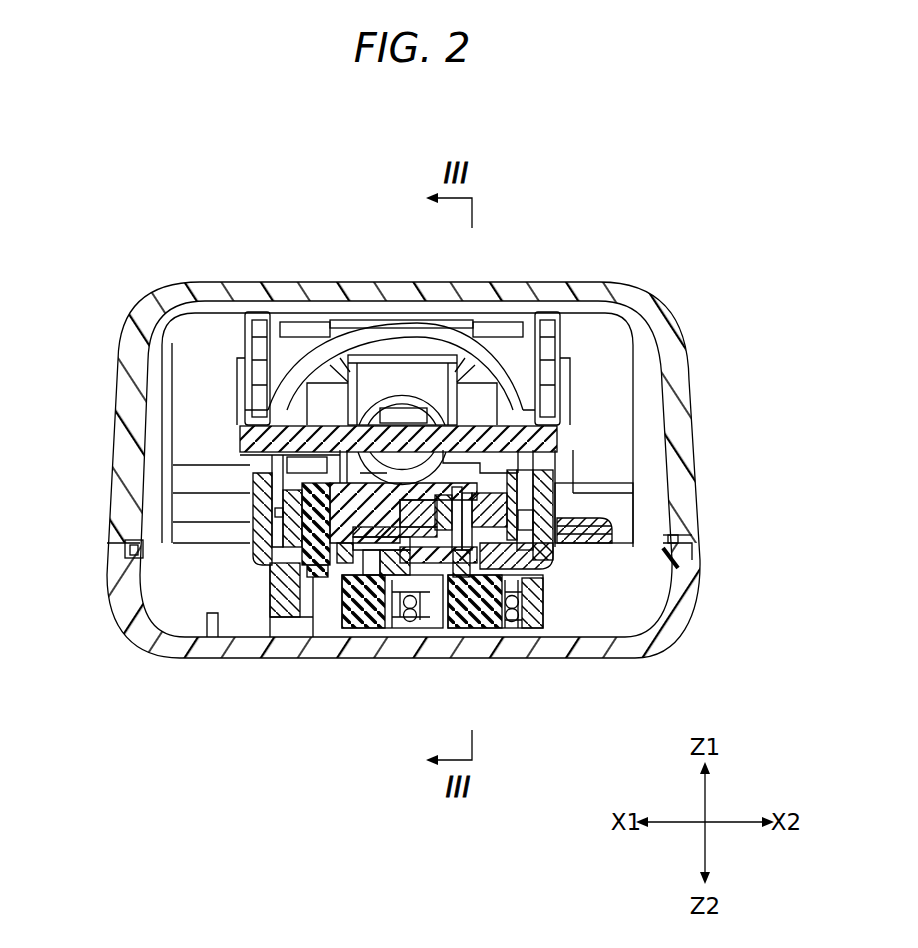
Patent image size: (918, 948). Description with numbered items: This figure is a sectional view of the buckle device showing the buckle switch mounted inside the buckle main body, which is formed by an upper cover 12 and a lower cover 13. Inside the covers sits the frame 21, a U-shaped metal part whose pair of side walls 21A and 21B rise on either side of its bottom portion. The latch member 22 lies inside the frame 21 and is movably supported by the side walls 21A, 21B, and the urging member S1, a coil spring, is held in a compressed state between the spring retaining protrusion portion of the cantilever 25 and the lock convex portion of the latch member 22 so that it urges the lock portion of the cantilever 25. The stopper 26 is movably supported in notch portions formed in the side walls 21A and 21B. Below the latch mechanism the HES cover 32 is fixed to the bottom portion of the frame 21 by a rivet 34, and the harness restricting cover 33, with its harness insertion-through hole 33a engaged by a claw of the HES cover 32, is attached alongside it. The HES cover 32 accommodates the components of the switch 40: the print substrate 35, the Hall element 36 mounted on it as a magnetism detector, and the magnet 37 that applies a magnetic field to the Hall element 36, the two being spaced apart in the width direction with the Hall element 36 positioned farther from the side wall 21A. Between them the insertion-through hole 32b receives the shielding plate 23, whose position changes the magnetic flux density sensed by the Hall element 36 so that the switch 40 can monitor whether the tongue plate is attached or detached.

The upper cover 12 is at (657, 299).
The lower cover 13 is at (710, 602).
The frame 21 is at (244, 510).
The side wall 21A is at (676, 537).
The side wall 21B is at (125, 548).
The latch member 22 is at (236, 432).
The shielding plate 23 is at (557, 518).
The cantilever 25 is at (418, 370).
The stopper 26 is at (317, 343).
The HES cover 32 is at (255, 478).
The insertion-through hole 32b is at (458, 560).
The harness restricting cover 33 is at (490, 628).
The harness insertion-through hole 33a is at (393, 592).
The rivet 34 is at (310, 590).
The print substrate 35 is at (373, 560).
The Hall element 36 is at (520, 483).
The magnet 37 is at (510, 505).
The switch 40 is at (752, 414).
The urging member S1 is at (400, 395).